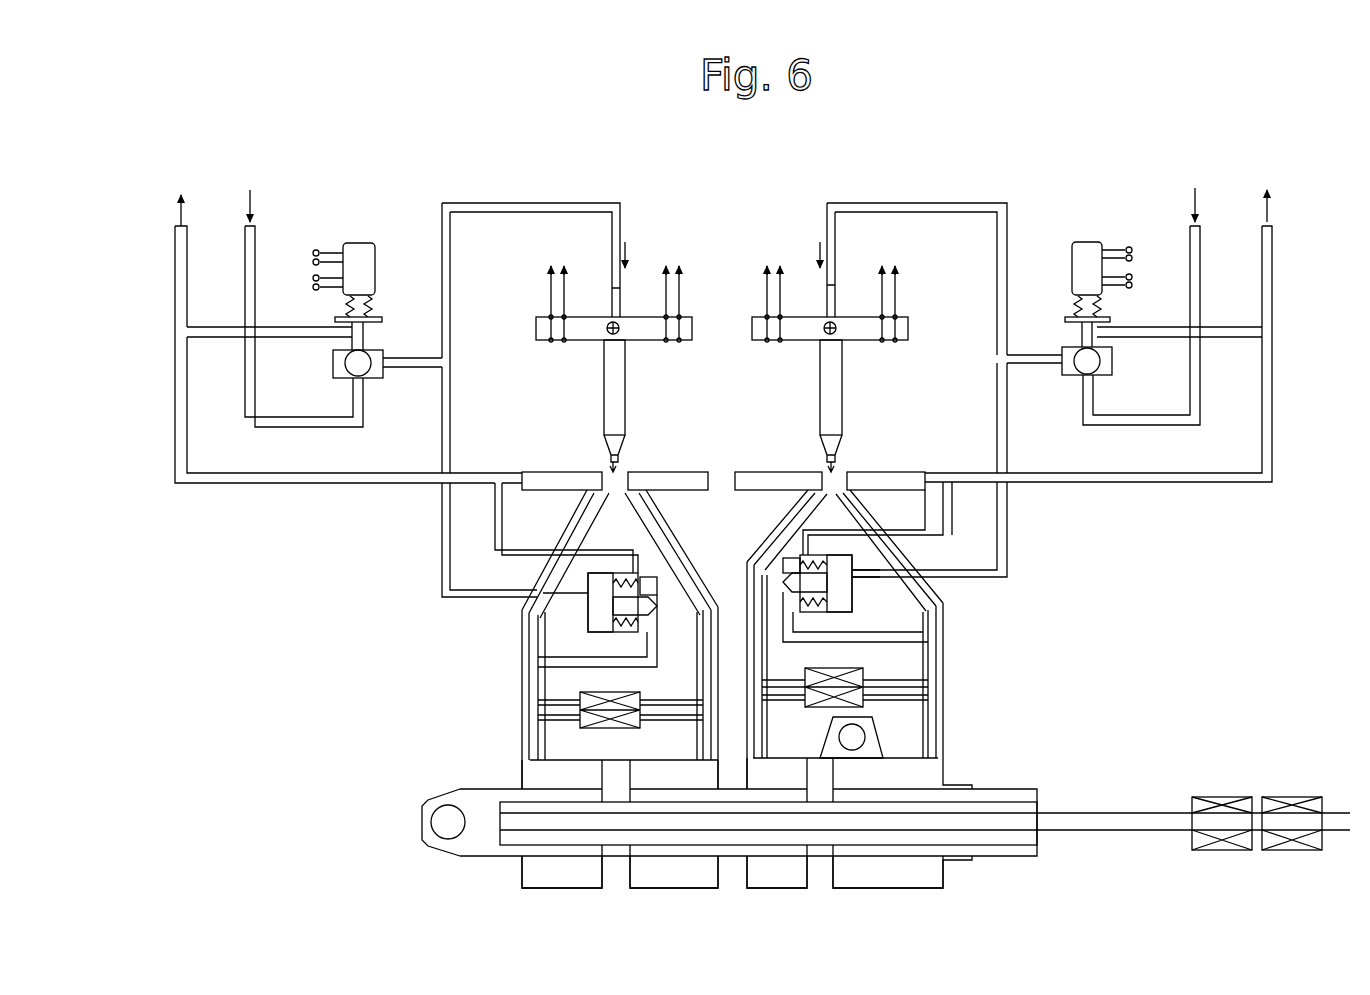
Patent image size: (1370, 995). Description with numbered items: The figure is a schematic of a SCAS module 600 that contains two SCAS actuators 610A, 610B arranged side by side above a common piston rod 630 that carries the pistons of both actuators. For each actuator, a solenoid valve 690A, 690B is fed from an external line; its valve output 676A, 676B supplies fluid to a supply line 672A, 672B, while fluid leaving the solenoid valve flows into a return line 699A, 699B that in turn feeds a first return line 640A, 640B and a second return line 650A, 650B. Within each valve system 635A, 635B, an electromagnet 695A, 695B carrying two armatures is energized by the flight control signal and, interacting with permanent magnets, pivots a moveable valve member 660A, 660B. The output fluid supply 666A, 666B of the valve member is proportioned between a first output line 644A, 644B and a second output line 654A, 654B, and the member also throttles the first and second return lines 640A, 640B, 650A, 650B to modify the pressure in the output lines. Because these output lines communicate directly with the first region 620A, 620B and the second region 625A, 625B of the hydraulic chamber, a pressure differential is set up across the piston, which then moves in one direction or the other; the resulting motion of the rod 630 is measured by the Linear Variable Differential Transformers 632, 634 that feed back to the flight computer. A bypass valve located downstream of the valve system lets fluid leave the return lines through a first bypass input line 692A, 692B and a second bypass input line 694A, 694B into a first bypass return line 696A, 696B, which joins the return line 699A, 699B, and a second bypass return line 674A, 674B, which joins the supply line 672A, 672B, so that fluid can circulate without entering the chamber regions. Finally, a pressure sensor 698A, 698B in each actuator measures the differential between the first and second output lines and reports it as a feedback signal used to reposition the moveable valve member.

The SCAS module 600 is at (1030, 138).
The first SCAS actuator 610A is at (368, 708).
The second SCAS actuator 610B is at (1066, 643).
The first region of the hydraulic chamber 620A is at (560, 870).
The first region of the hydraulic chamber 620B is at (775, 870).
The second region of the hydraulic chamber 625A is at (680, 870).
The second region of the hydraulic chamber 625B is at (885, 870).
The rack shaft 630 is at (1113, 813).
The Linear Variable Differential Transformer 632 is at (1220, 797).
The Linear Variable Differential Transformer 634 is at (1288, 797).
The valve system 635A is at (522, 293).
The valve system 635B is at (916, 290).
The first return line 640A is at (505, 470).
The first return line 640B is at (780, 470).
The first output line 644A is at (525, 607).
The first output line 644B is at (807, 470).
The second return line 650A is at (637, 468).
The second return line 650B is at (872, 468).
The second output line 654A is at (657, 485).
The second output line 654B is at (910, 470).
The moveable valve member 660A is at (618, 370).
The moveable valve member 660B is at (828, 370).
The output fluid supply 666A is at (613, 468).
The output fluid supply 666B is at (850, 468).
The supply line 672A is at (545, 203).
The supply line 672B is at (883, 203).
The second bypass return line 674A is at (440, 558).
The second bypass return line 674B is at (1005, 548).
The valve output 676A is at (407, 368).
The valve output 676B is at (1033, 367).
The solenoid valve 690A is at (358, 245).
The solenoid valve 690B is at (1088, 242).
The first bypass input line 692A is at (670, 600).
The first bypass input line 692B is at (878, 635).
The second bypass input line 694A is at (592, 660).
The second bypass input line 694B is at (783, 583).
The electromagnet 695A is at (585, 323).
The electromagnet 695B is at (865, 323).
The first bypass return line 696A is at (495, 512).
The first bypass return line 696B is at (953, 502).
The pressure sensor 698A is at (580, 720).
The pressure sensor 698B is at (863, 690).
The return line 699A is at (223, 335).
The return line 699B is at (1225, 325).